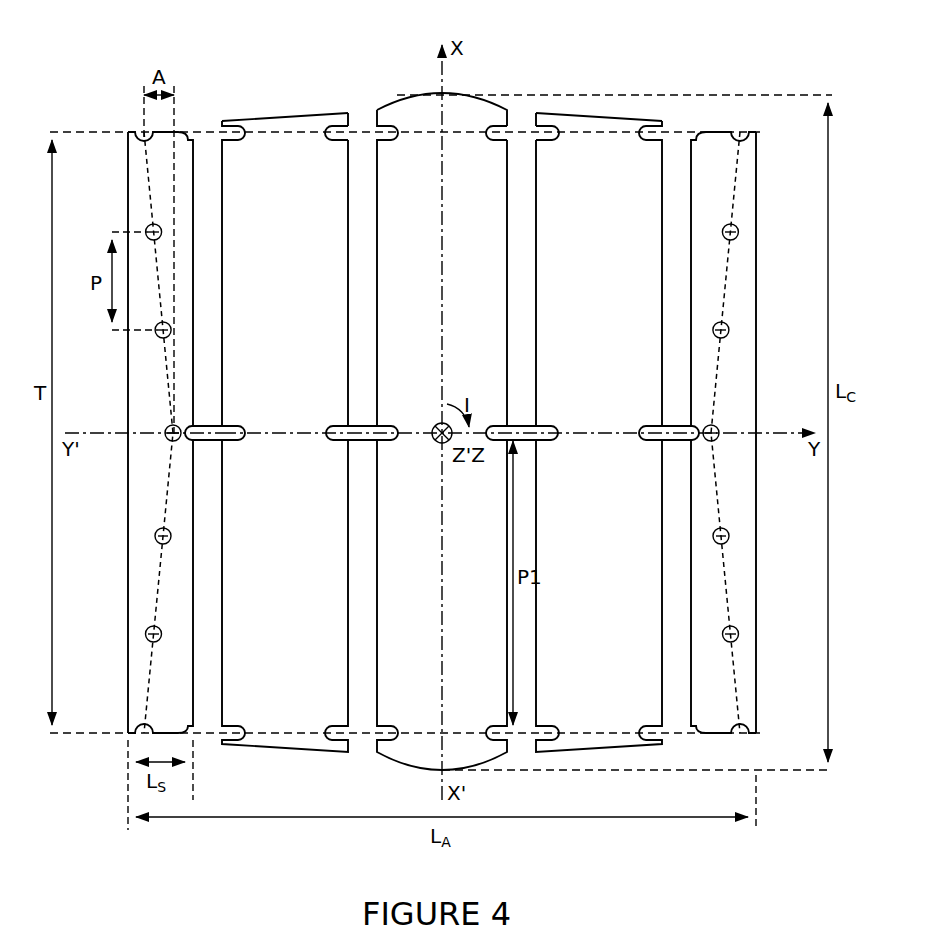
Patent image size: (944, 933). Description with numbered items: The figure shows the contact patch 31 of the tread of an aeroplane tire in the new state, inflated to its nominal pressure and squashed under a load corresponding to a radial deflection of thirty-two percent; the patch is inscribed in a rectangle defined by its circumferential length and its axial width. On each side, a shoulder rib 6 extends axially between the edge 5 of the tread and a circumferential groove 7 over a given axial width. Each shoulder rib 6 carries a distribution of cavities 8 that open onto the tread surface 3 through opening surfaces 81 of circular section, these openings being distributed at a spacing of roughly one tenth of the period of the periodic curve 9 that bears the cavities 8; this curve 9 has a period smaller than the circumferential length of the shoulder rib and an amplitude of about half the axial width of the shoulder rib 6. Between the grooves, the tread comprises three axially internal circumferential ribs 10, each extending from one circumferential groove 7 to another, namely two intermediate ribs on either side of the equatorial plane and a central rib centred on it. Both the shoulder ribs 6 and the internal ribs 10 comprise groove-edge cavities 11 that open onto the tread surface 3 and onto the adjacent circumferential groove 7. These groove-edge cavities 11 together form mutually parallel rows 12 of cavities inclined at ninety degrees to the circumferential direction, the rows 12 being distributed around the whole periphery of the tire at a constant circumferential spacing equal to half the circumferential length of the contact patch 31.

The tread surface 3 is at (285, 376).
The contact patch 31 is at (339, 84).
The axially internal circumferential ribs 10 is at (579, 123).
The circumferential groove 7 is at (676, 165).
The shoulder rib 6 is at (751, 388).
The edge of the tread 5 is at (760, 178).
The opening surfaces 81 is at (740, 228).
The cavities 8 is at (731, 328).
The curve 9 is at (728, 589).
The groove-edge cavities 11 is at (379, 425).
The rows of cavities 12 is at (304, 430).